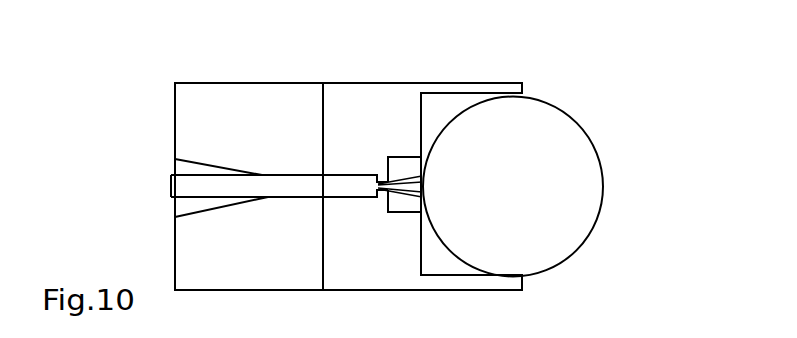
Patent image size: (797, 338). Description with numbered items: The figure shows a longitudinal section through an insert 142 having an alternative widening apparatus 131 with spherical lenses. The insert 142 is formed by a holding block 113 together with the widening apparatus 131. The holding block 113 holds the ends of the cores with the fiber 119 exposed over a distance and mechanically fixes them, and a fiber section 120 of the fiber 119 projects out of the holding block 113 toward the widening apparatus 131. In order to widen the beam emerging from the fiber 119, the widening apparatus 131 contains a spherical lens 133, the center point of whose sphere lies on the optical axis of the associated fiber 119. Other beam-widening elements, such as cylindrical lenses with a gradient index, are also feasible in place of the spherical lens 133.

The holding block 113 is at (223, 105).
The widening apparatus 131 is at (378, 103).
The fiber 119 is at (292, 186).
The fiber section 120 is at (347, 186).
The spherical lens 133 is at (562, 235).
The insert 142 is at (610, 144).